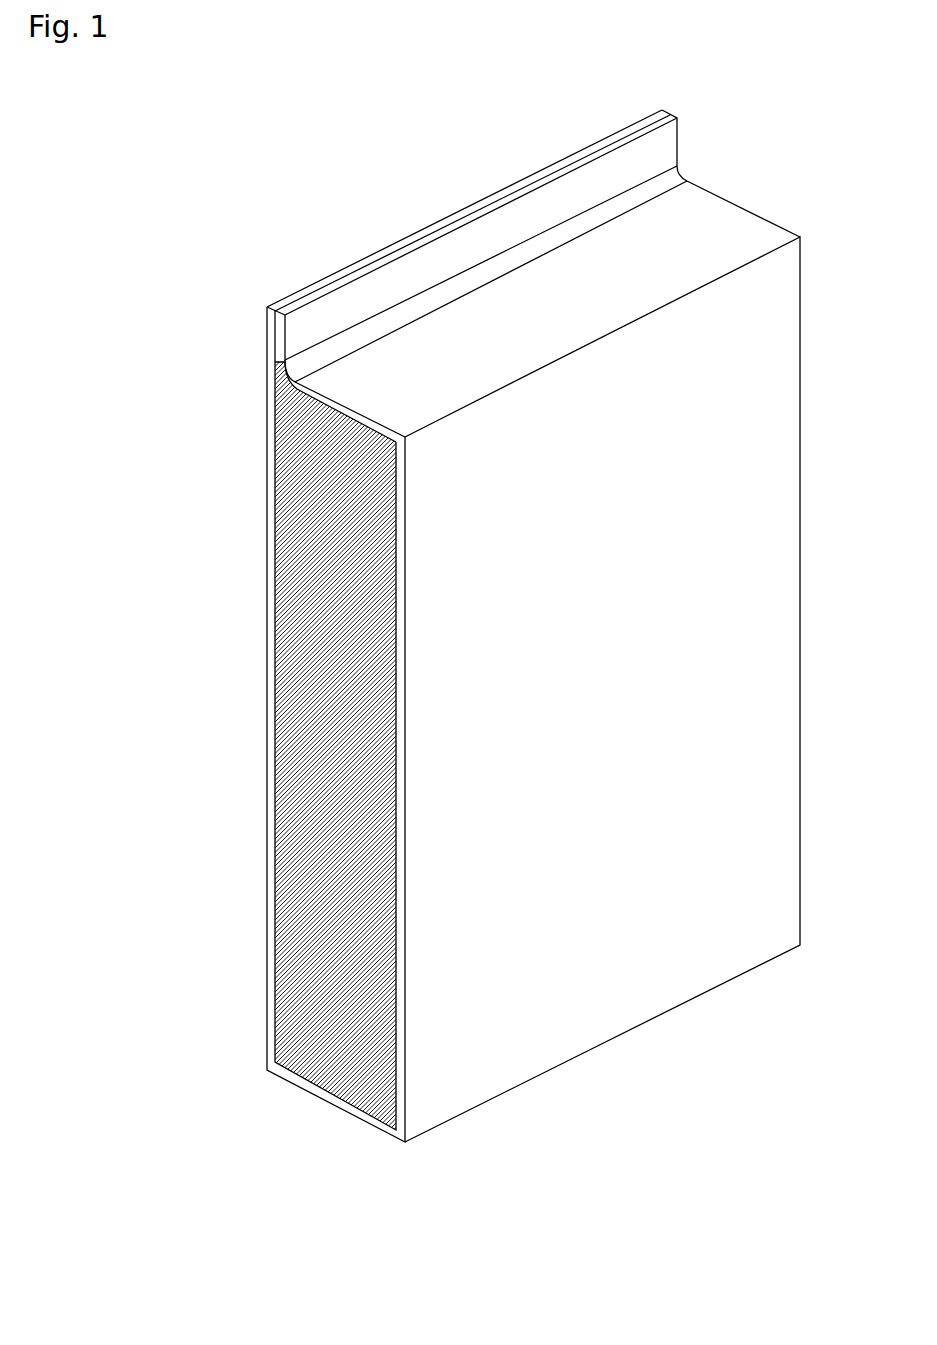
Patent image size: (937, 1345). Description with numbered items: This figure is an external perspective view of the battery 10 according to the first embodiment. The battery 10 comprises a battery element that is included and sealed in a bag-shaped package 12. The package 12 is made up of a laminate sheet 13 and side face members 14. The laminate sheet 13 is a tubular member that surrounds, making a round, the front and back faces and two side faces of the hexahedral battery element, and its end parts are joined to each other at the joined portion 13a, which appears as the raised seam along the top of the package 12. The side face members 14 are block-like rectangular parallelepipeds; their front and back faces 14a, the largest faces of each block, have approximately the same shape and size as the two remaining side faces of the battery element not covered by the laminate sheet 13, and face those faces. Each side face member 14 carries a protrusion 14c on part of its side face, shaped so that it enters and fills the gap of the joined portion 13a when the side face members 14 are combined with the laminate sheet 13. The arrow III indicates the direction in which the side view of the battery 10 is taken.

The battery 10 is at (187, 147).
The package 12 is at (214, 280).
The laminate sheet 13 is at (255, 358).
The joined portion 13a is at (403, 240).
The side face member 14 is at (249, 636).
The front and back faces 14a is at (288, 518).
The protrusion 14c is at (283, 371).
The arrow III is at (236, 696).